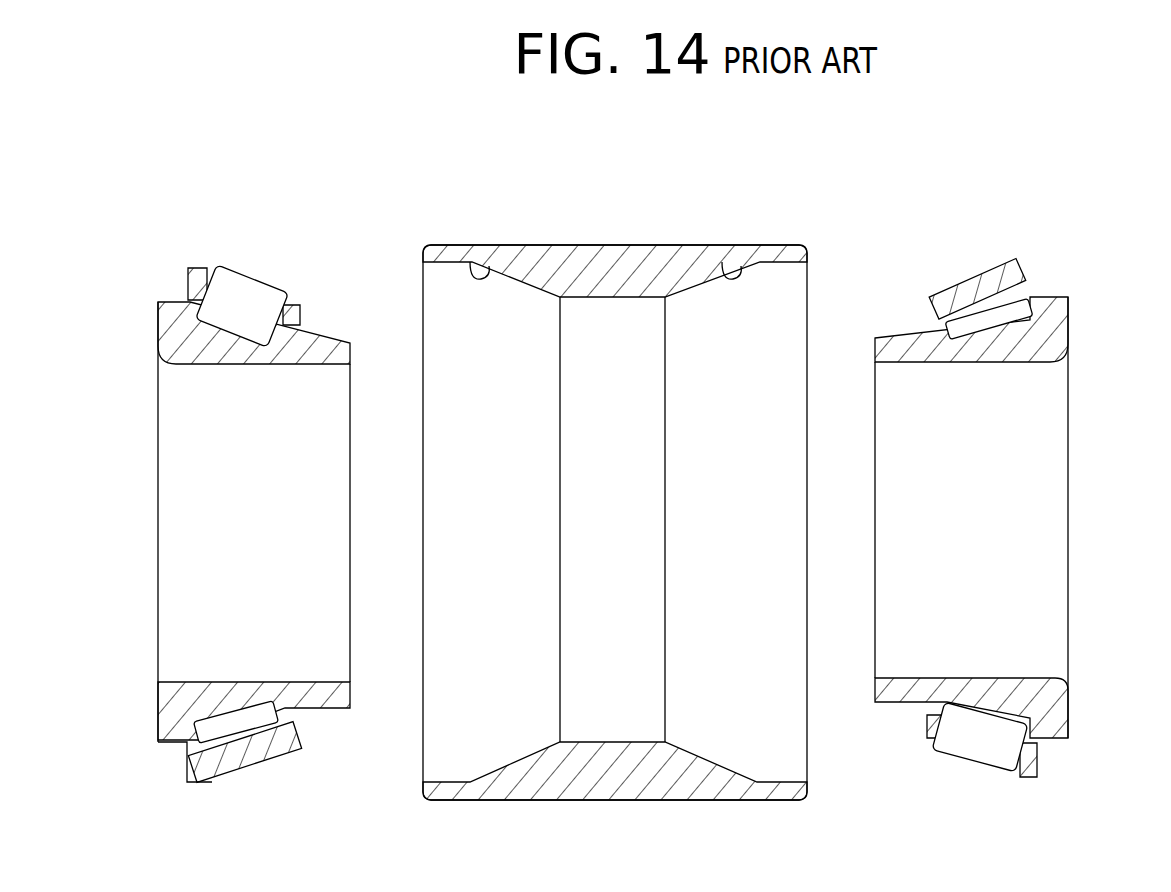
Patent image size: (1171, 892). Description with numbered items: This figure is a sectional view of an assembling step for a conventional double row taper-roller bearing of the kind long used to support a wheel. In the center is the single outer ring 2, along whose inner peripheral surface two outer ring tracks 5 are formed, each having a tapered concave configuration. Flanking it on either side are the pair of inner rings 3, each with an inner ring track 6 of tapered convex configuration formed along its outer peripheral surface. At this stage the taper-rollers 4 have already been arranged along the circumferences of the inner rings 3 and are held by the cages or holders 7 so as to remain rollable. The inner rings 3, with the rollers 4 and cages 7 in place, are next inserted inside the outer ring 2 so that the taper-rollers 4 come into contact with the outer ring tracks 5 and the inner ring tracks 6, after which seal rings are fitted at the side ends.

The outer ring 2 is at (607, 277).
The inner ring 3 is at (227, 355).
The taper-roller 4 is at (250, 293).
The outer ring track 5 is at (472, 272).
The inner ring track 6 is at (243, 712).
The cage 7 is at (188, 762).